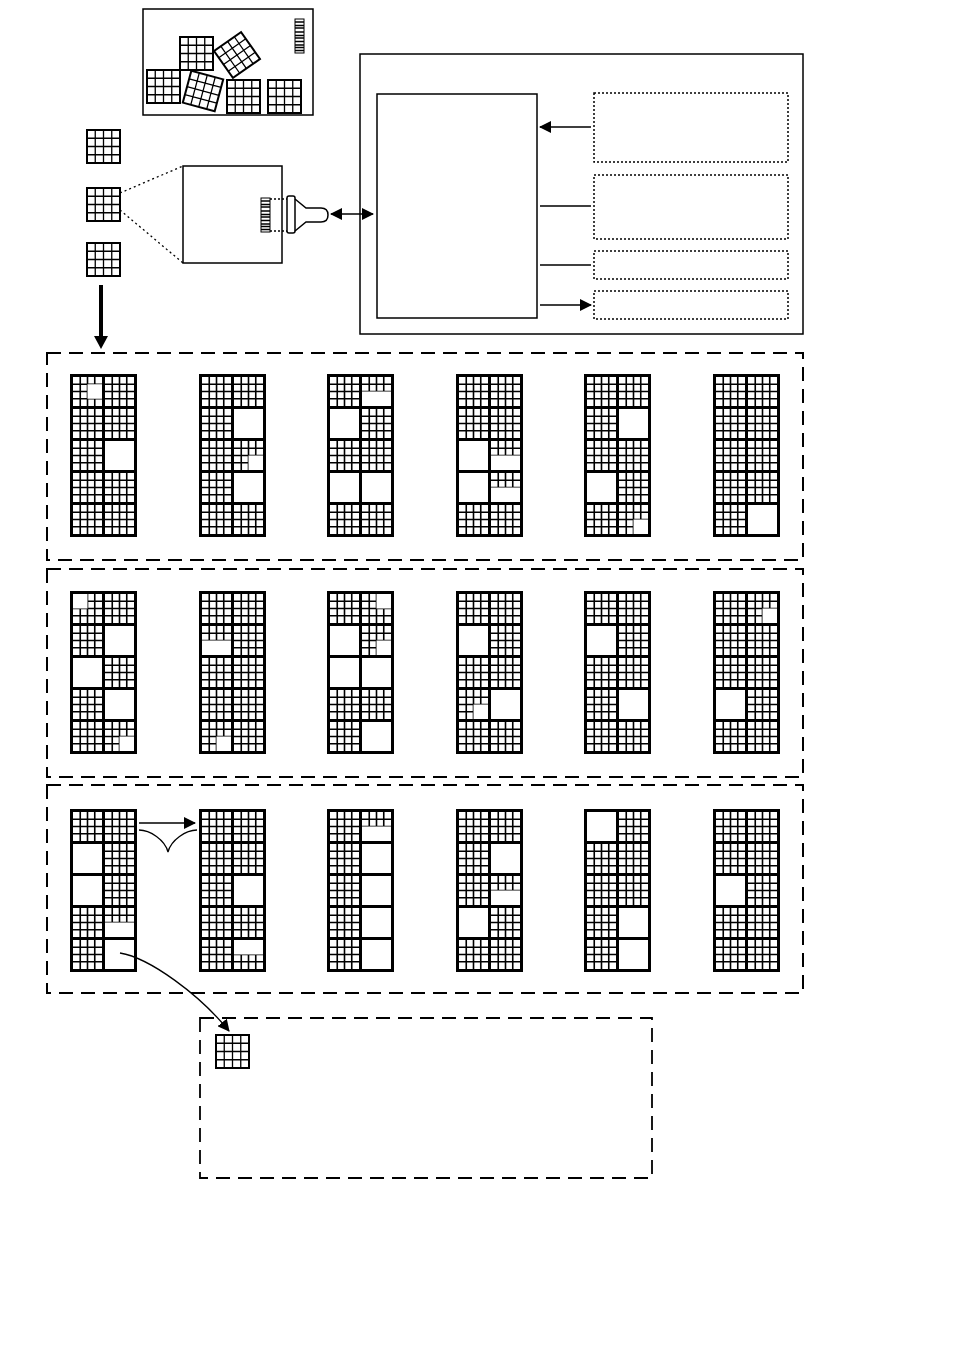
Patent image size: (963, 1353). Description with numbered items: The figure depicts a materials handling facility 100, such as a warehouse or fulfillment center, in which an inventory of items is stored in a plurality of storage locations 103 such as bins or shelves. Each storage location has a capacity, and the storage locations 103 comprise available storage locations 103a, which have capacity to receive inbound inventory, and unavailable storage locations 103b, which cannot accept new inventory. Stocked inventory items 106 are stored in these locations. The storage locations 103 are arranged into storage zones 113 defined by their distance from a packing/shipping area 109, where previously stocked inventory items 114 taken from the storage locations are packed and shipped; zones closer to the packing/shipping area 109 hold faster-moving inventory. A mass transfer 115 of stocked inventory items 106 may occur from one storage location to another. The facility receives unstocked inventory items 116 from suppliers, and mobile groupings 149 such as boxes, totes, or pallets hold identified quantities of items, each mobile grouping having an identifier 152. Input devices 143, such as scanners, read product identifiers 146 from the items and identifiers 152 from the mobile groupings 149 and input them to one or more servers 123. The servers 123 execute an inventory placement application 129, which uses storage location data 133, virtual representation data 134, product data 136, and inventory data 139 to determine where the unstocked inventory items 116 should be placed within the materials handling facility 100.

The materials handling facility 100 is at (92, 1102).
The storage locations 103 is at (425, 718).
The available storage locations 103a is at (377, 604).
The unavailable storage locations 103b is at (524, 609).
The stocked inventory items 106 is at (250, 860).
The packing/shipping area 109 is at (426, 1098).
The storage zones 113 is at (804, 458).
The previously stocked inventory items 114 is at (216, 1045).
The mass transfer 115 is at (168, 853).
The unstocked inventory items 116 is at (87, 258).
The servers 123 is at (581, 194).
The inventory placement application 129 is at (457, 206).
The storage location data 133 is at (691, 127).
The virtual representation data 134 is at (691, 207).
The product data 136 is at (691, 265).
The inventory data 139 is at (691, 305).
The input devices 143 is at (291, 204).
The product identifiers 146 is at (261, 213).
The mobile groupings 149 is at (209, 62).
The identifier 152 is at (304, 33).